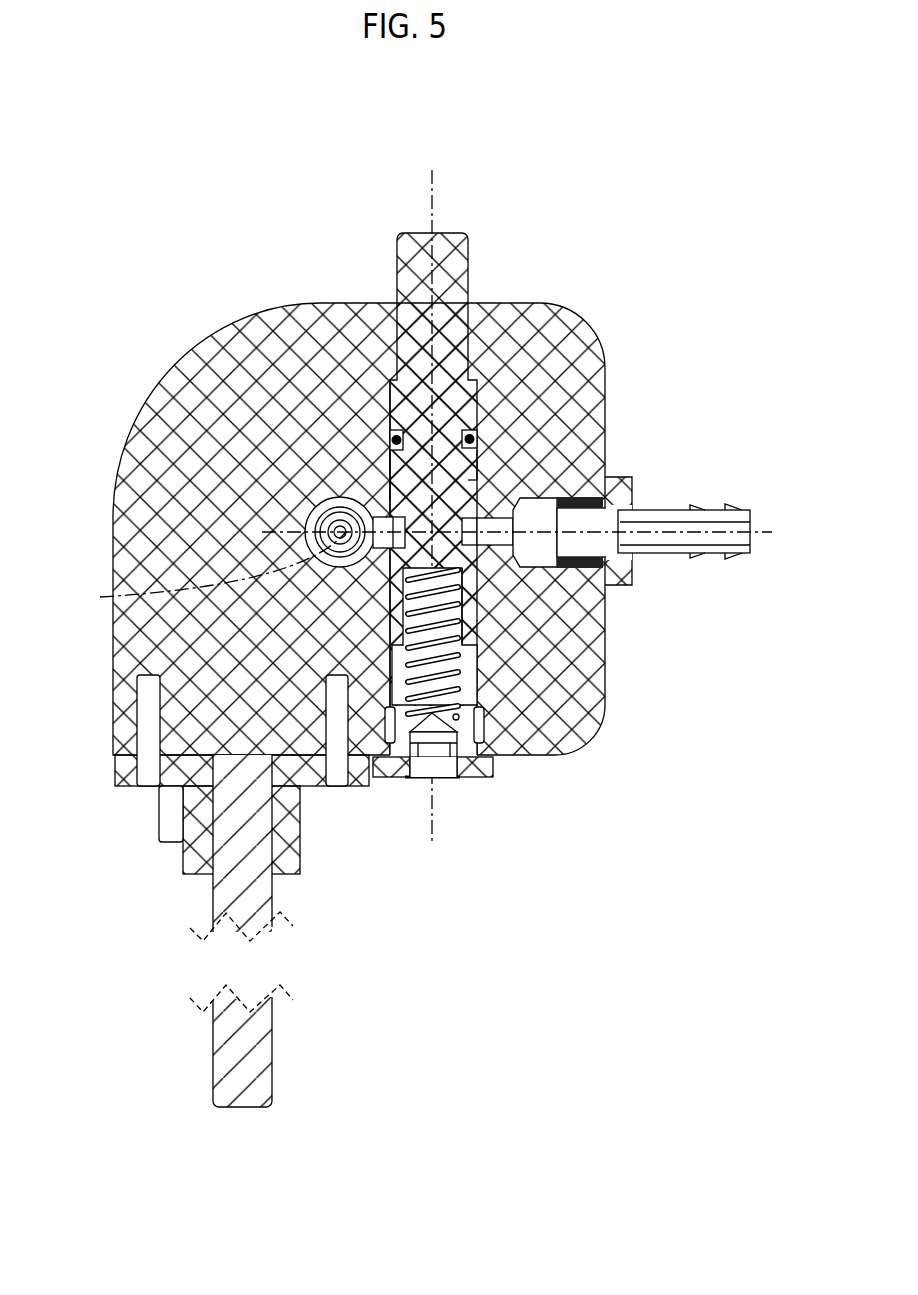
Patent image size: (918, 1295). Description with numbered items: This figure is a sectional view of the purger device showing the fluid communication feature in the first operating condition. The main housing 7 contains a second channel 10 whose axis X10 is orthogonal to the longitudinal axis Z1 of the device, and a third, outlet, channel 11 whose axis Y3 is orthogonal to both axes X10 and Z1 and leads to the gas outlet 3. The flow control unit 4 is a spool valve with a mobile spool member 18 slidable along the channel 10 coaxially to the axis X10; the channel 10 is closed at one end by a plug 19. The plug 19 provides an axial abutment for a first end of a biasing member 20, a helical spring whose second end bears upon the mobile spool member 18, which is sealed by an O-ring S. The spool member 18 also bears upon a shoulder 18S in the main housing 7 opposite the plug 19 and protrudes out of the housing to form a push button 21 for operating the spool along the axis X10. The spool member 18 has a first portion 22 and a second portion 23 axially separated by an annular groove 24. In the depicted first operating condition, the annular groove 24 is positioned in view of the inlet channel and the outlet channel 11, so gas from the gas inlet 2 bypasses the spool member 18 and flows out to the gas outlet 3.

The main housing 7 is at (163, 372).
The push button 21 is at (408, 238).
The shoulder 18S is at (390, 378).
The mobile spool member 18 is at (398, 468).
The axis of second channel X10 is at (436, 176).
The flow control unit 4 is at (485, 462).
The O-ring S is at (478, 438).
The first portion 22 is at (472, 483).
The gas inlet 2 is at (336, 520).
The longitudinal axis Z1 is at (196, 594).
The biasing member 20 is at (408, 676).
The second channel 10 is at (470, 668).
The second portion 23 is at (470, 610).
The plug 19 is at (482, 771).
The third outlet channel 11 is at (470, 520).
The annular groove 24 is at (540, 552).
The gas outlet 3 is at (662, 556).
The axis of third outlet channel Y3 is at (695, 532).